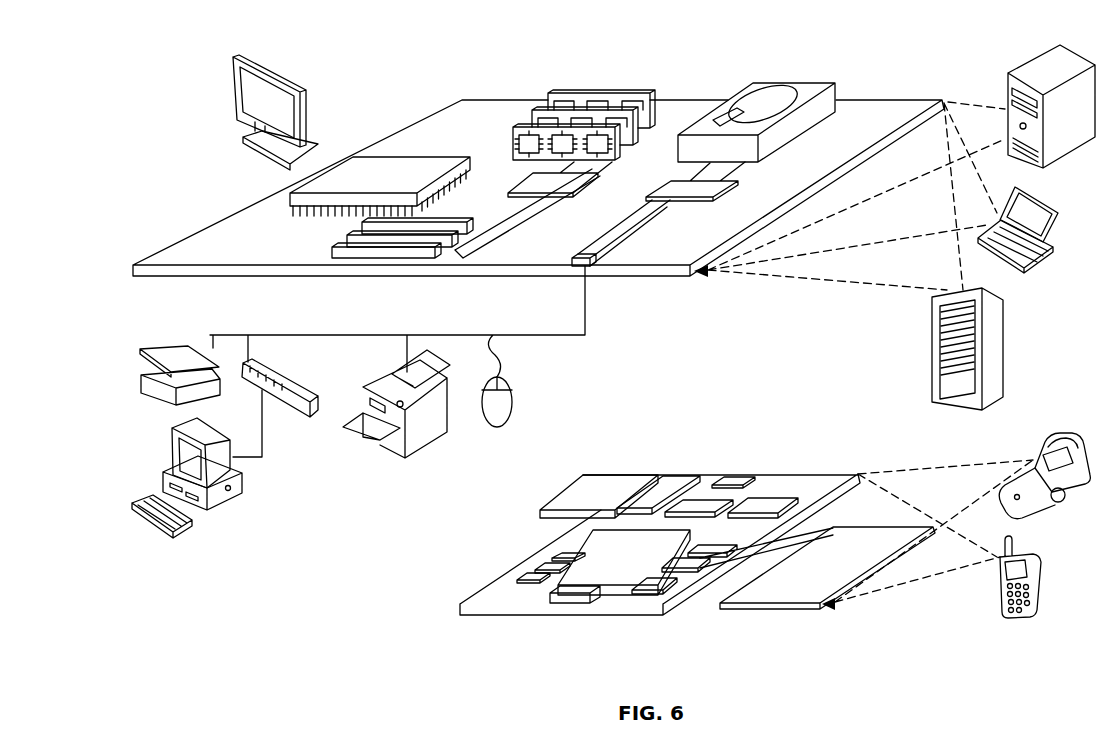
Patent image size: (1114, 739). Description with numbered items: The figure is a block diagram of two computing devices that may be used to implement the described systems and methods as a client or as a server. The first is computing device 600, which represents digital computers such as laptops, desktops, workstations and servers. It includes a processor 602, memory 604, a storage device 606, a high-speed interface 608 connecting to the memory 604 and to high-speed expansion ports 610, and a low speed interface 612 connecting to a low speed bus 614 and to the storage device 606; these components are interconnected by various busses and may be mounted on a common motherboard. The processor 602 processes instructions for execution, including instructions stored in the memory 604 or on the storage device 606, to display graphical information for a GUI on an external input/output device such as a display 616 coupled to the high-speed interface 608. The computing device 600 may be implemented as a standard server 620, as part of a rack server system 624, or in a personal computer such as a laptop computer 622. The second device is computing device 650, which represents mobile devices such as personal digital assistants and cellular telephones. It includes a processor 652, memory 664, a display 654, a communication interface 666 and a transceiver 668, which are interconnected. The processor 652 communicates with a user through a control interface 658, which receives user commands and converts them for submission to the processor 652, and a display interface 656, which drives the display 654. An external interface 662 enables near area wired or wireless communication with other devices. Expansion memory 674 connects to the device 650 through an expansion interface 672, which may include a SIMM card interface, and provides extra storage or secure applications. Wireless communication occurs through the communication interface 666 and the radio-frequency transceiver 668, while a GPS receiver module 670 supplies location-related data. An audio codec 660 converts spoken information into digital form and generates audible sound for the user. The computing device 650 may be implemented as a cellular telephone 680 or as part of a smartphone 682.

The computing device 600 is at (392, 77).
The processor 602 is at (297, 200).
The memory 604 is at (563, 94).
The storage device 606 is at (748, 84).
The high-speed interface 608 is at (537, 183).
The high-speed expansion ports 610 is at (350, 247).
The low speed interface 612 is at (677, 183).
The low speed bus 614 is at (588, 266).
The display 616 is at (243, 58).
The standard server 620 is at (1007, 89).
The laptop computer 622 is at (1058, 213).
The rack server system 624 is at (933, 371).
The computing device 650 is at (436, 614).
The processor 652 is at (603, 578).
The display 654 is at (797, 594).
The display interface 656 is at (660, 585).
The control interface 658 is at (695, 565).
The audio codec 660 is at (707, 553).
The external interface 662 is at (575, 598).
The memory 664 is at (550, 578).
The communication interface 666 is at (700, 505).
The transceiver 668 is at (762, 507).
The GPS receiver module 670 is at (733, 480).
The expansion interface 672 is at (647, 483).
The expansion memory 674 is at (607, 484).
The cellular telephone 680 is at (1048, 436).
The smartphone 682 is at (1003, 563).